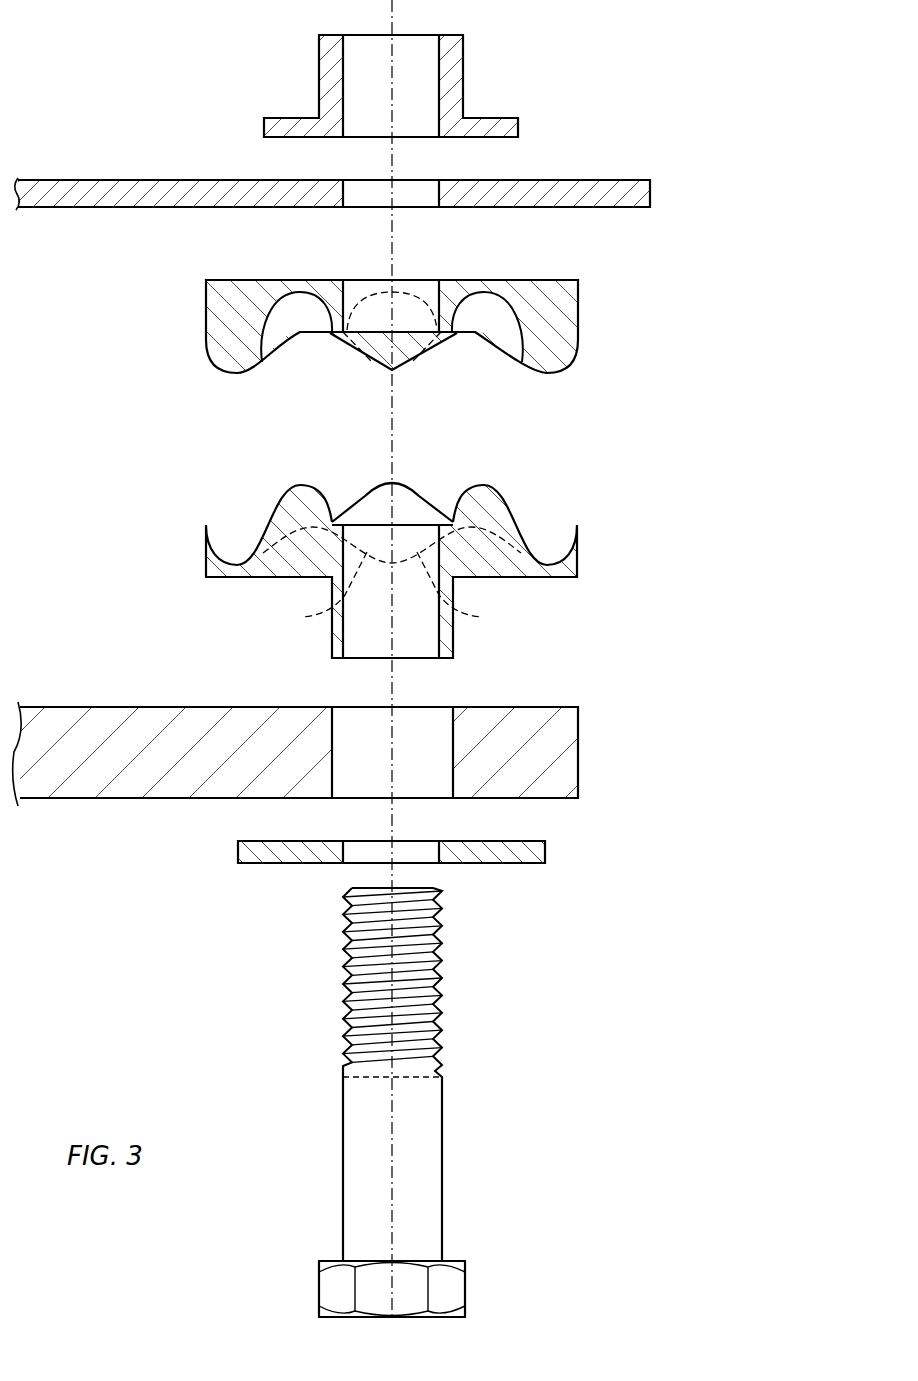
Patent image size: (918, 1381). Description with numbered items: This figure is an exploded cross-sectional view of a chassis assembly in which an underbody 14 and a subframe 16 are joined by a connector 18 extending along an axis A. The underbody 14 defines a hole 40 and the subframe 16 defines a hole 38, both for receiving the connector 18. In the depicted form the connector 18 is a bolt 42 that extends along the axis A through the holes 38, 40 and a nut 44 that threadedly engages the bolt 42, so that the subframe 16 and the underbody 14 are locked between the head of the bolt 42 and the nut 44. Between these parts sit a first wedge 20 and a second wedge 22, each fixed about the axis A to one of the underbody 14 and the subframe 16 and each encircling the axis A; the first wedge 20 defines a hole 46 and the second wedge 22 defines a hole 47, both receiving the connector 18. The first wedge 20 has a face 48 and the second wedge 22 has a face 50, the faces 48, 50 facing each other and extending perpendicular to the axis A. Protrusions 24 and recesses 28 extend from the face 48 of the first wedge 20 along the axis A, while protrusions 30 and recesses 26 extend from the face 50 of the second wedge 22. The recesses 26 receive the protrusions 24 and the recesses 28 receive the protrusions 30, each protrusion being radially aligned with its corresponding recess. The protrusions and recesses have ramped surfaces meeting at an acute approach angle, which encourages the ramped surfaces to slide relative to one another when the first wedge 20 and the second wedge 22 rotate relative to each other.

The axis A is at (396, 24).
The underbody 14 is at (367, 176).
The subframe 16 is at (328, 762).
The connector 18 is at (398, 1102).
The first wedge 20 is at (356, 324).
The second wedge 22 is at (360, 565).
The protrusion 24 is at (243, 384).
The recess 26 is at (235, 537).
The recess 28 is at (295, 324).
The protrusion 30 is at (257, 499).
The hole 38 is at (422, 787).
The hole 40 is at (422, 183).
The bolt 42 is at (352, 1182).
The nut 44 is at (463, 47).
The hole 46 is at (410, 292).
The hole 47 is at (363, 640).
The face 48 is at (588, 402).
The face 50 is at (200, 461).